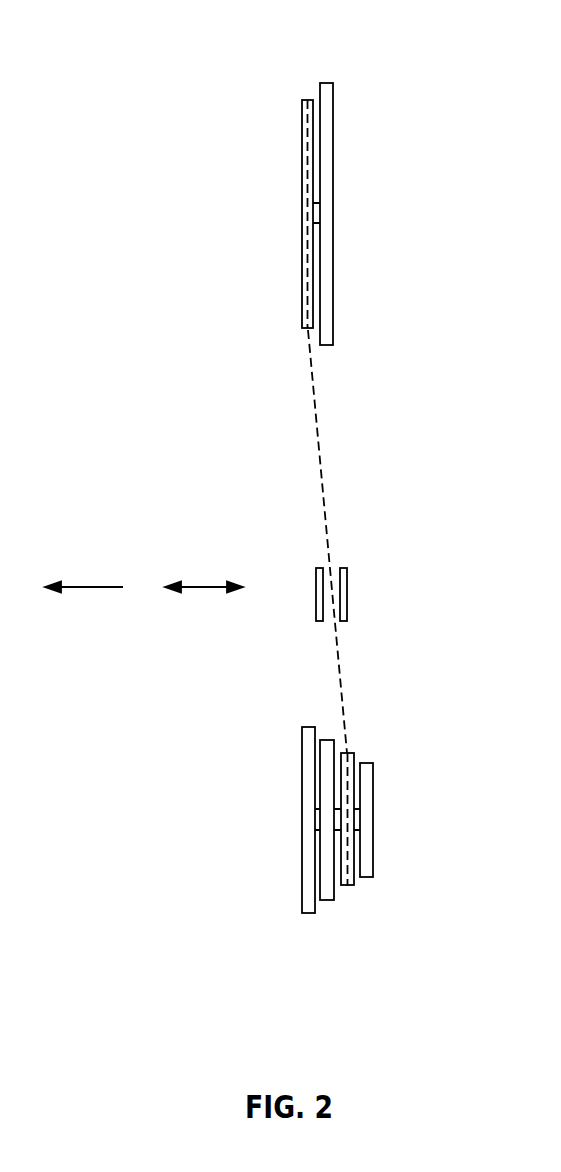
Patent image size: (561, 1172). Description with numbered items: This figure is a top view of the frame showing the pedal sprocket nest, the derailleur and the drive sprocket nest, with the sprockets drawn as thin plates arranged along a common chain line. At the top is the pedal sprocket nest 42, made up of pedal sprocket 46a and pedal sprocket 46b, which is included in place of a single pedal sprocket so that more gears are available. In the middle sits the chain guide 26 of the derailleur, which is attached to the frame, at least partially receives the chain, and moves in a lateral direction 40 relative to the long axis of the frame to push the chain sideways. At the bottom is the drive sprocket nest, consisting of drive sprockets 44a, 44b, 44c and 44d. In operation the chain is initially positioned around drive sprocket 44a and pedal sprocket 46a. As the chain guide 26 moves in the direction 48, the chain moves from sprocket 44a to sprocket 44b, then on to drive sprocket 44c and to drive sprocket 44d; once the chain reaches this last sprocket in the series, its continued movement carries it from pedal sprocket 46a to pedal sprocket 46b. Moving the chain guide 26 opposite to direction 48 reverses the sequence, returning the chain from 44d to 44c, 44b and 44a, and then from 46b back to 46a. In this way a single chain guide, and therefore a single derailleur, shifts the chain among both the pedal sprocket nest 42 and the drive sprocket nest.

The chain guide 26 is at (348, 593).
The lateral direction 40 is at (203, 588).
The pedal sprocket nest 42 is at (334, 203).
The drive sprocket 44a is at (365, 877).
The drive sprocket 44b is at (350, 886).
The drive sprocket 44c is at (328, 900).
The drive sprocket 44d is at (308, 913).
The pedal sprocket 46a is at (327, 83).
The pedal sprocket 46b is at (304, 100).
The direction of chain guide movement 48 is at (90, 588).